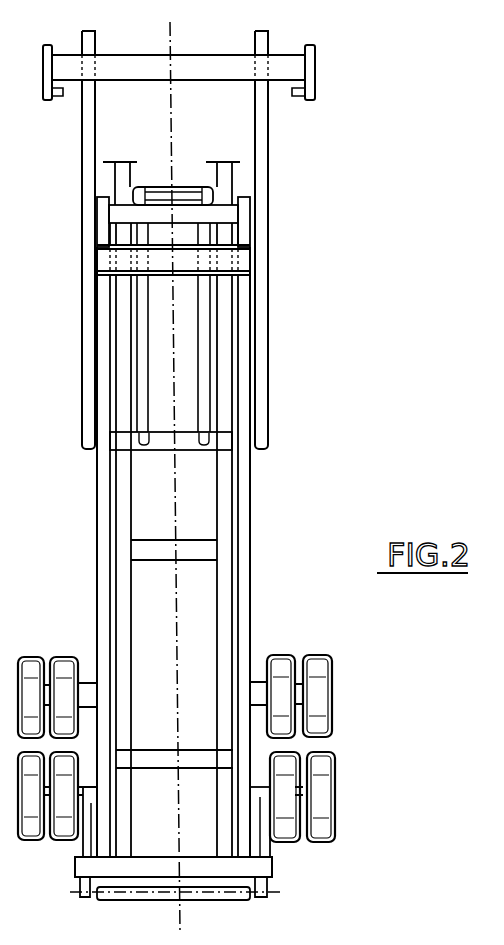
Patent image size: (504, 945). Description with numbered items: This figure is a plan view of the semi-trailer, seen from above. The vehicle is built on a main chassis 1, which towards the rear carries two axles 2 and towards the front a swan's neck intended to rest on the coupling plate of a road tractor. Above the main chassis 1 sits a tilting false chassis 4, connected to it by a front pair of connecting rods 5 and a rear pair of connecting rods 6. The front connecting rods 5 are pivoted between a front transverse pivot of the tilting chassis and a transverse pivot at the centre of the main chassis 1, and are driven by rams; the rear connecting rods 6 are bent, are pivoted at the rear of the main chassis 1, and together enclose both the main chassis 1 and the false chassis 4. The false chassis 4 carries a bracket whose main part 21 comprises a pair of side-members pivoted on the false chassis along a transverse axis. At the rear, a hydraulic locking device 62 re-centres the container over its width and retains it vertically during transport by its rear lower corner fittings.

The main chassis 1 is at (208, 622).
The axles 2 is at (347, 693).
The tilting false chassis 4 is at (260, 500).
The front connecting rods 5 is at (142, 362).
The rear connecting rods 6 is at (257, 845).
The main part of bracket 21 is at (263, 302).
The rear hydraulic locking device 62 is at (329, 51).